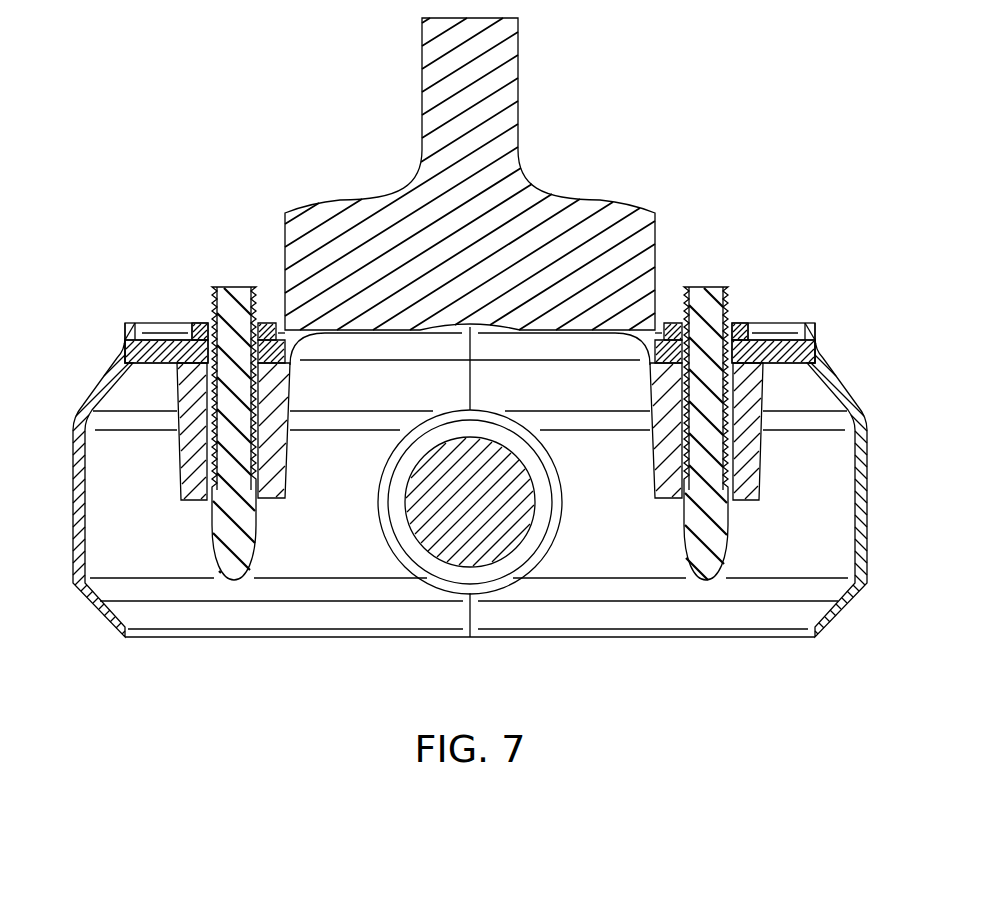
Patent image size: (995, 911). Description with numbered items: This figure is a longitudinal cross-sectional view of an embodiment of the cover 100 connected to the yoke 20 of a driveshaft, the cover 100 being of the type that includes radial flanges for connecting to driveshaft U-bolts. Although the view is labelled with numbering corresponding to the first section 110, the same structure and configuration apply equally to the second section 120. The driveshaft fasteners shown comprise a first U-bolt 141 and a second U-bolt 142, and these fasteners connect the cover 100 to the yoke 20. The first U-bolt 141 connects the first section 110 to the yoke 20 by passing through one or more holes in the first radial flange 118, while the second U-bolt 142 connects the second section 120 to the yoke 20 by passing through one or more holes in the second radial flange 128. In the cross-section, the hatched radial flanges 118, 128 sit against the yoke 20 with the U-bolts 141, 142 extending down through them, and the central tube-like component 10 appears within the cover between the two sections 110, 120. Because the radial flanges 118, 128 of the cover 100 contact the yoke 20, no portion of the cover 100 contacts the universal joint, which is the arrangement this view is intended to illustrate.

The cover 100 is at (74, 378).
The first section 110 is at (99, 498).
The second section 120 is at (832, 538).
The first radial flange 118 is at (165, 352).
The second radial flange 128 is at (765, 350).
The yoke 20 is at (192, 410).
The pipe 10 is at (512, 487).
The first U-bolt 141 is at (228, 578).
The second U-bolt 142 is at (708, 578).